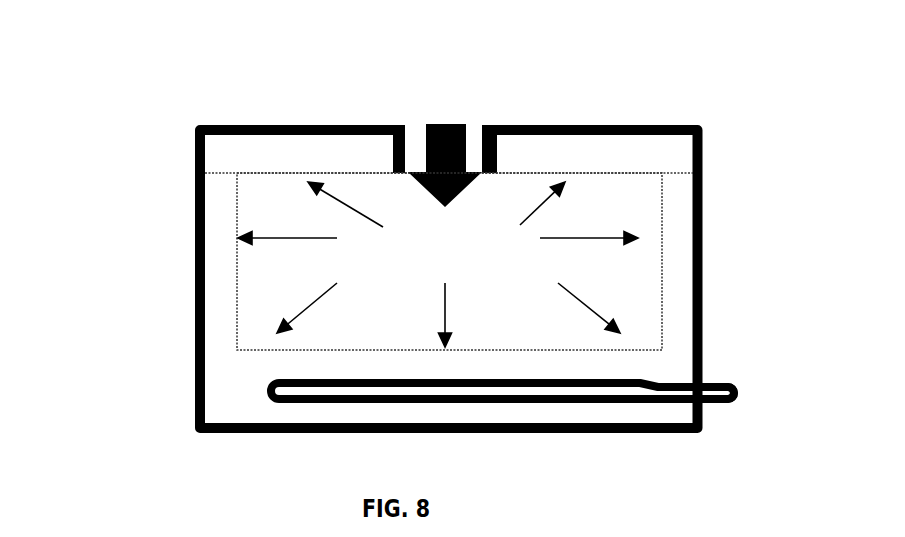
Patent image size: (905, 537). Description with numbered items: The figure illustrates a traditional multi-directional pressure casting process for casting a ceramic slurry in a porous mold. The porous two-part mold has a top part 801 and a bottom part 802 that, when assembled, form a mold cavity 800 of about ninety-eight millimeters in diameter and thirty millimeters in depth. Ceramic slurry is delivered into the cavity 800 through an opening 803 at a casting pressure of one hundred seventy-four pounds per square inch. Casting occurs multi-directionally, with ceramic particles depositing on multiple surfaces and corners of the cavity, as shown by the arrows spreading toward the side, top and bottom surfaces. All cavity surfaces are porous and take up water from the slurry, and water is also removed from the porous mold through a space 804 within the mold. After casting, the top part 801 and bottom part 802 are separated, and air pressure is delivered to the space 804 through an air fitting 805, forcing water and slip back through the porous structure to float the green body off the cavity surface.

The mold cavity 800 is at (597, 285).
The top part 801 is at (228, 142).
The bottom part 802 is at (195, 363).
The opening 803 is at (427, 108).
The space 804 is at (483, 398).
The air fitting 805 is at (725, 398).